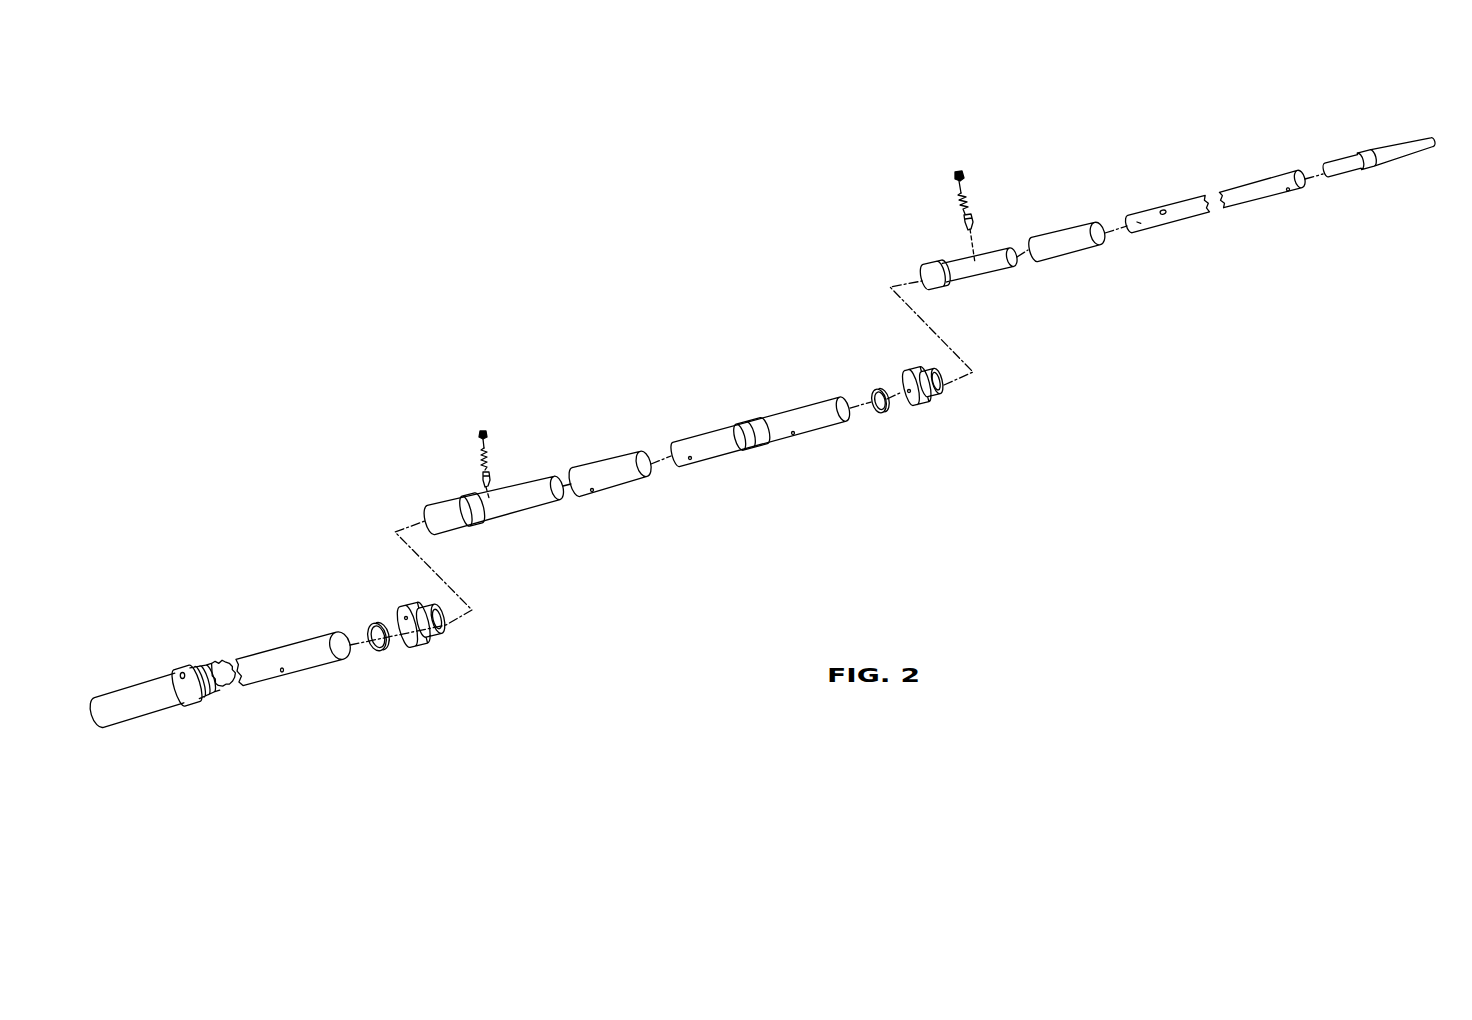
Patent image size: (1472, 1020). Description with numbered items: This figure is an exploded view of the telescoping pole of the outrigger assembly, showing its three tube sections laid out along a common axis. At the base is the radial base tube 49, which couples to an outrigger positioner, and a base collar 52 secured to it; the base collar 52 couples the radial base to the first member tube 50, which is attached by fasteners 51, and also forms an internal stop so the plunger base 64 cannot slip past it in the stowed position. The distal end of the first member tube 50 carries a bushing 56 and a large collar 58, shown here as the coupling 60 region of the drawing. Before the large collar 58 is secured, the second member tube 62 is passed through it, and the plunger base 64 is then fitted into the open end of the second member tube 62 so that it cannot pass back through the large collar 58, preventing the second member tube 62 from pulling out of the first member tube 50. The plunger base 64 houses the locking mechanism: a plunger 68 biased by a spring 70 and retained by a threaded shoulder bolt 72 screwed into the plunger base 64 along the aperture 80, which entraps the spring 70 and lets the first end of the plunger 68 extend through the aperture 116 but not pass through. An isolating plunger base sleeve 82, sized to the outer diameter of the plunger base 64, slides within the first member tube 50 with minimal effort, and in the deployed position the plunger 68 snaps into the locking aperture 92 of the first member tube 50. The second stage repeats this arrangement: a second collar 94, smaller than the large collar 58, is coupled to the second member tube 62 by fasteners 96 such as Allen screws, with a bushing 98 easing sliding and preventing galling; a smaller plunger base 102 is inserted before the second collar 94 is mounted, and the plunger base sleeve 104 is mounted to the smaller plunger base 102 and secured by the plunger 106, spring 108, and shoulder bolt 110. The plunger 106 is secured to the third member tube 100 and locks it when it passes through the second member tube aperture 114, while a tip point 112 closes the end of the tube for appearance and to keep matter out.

The radial base tube 49 is at (115, 710).
The first member tube 50 is at (300, 652).
The fasteners 51 is at (181, 672).
The base collar 52 is at (205, 700).
The bushing 56 is at (381, 652).
The large collar 58 is at (436, 640).
The coupling body 60 is at (405, 618).
The second member tube 62 is at (773, 420).
The plunger base 64 is at (443, 517).
The plunger 68 is at (488, 477).
The spring 70 is at (482, 455).
The threaded shoulder bolt 72 is at (485, 431).
The aperture 80 is at (490, 515).
The plunger base sleeve 82 is at (600, 475).
The locking aperture 92 is at (283, 672).
The second collar 94 is at (936, 400).
The fasteners 96 is at (908, 390).
The bushing 98 is at (882, 413).
The third member tube 100 is at (1252, 190).
The smaller plunger base 102 is at (947, 268).
The plunger base sleeve 104 is at (1060, 247).
The plunger 106 is at (972, 218).
The spring 108 is at (962, 195).
The shoulder bolt 110 is at (960, 170).
The tip point 112 is at (1373, 160).
The second member tube aperture 114 is at (794, 434).
The aperture 116 is at (691, 459).